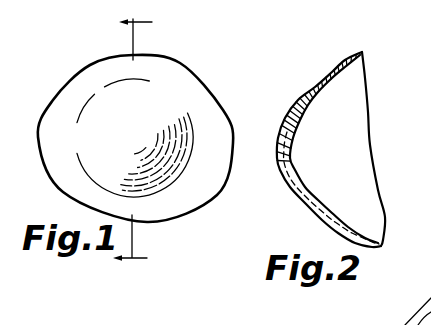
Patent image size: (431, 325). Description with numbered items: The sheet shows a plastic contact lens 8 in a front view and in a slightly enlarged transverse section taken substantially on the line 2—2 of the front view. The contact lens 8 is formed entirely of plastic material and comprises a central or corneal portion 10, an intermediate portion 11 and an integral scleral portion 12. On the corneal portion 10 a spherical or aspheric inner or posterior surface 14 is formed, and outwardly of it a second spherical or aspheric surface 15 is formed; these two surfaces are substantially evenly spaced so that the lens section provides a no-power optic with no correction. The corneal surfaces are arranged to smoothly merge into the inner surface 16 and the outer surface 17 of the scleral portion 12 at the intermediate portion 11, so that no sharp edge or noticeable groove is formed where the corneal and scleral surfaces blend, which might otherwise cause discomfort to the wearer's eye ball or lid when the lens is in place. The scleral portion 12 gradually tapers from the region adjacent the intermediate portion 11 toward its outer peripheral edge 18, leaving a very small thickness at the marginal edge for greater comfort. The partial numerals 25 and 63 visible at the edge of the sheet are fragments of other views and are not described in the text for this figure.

In FIG. 1, the section line 2— 2 is at (138, 143).
In FIG. 1, the contact lens 8 is at (219, 83).
In FIG. 1, the central or corneal portion 10 is at (170, 175).
In FIG. 1, the scleral portion 12 is at (218, 168).
In FIG. 2, the intermediate portion 11 is at (313, 206).
In FIG. 2, the inner or posterior surface 14 is at (307, 108).
In FIG. 2, the second spherical or aspheric surface 15 is at (283, 107).
In FIG. 2, the inner surface of the scleral portion 16 is at (338, 75).
In FIG. 2, the outer surface of the scleral portion 17 is at (323, 72).
In FIG. 2, the outer peripheral edge 18 is at (388, 233).
In FIG. 2, the adjacent figure element 25 is at (430, 119).
In FIG. 2, the adjacent figure element 63 is at (425, 297).